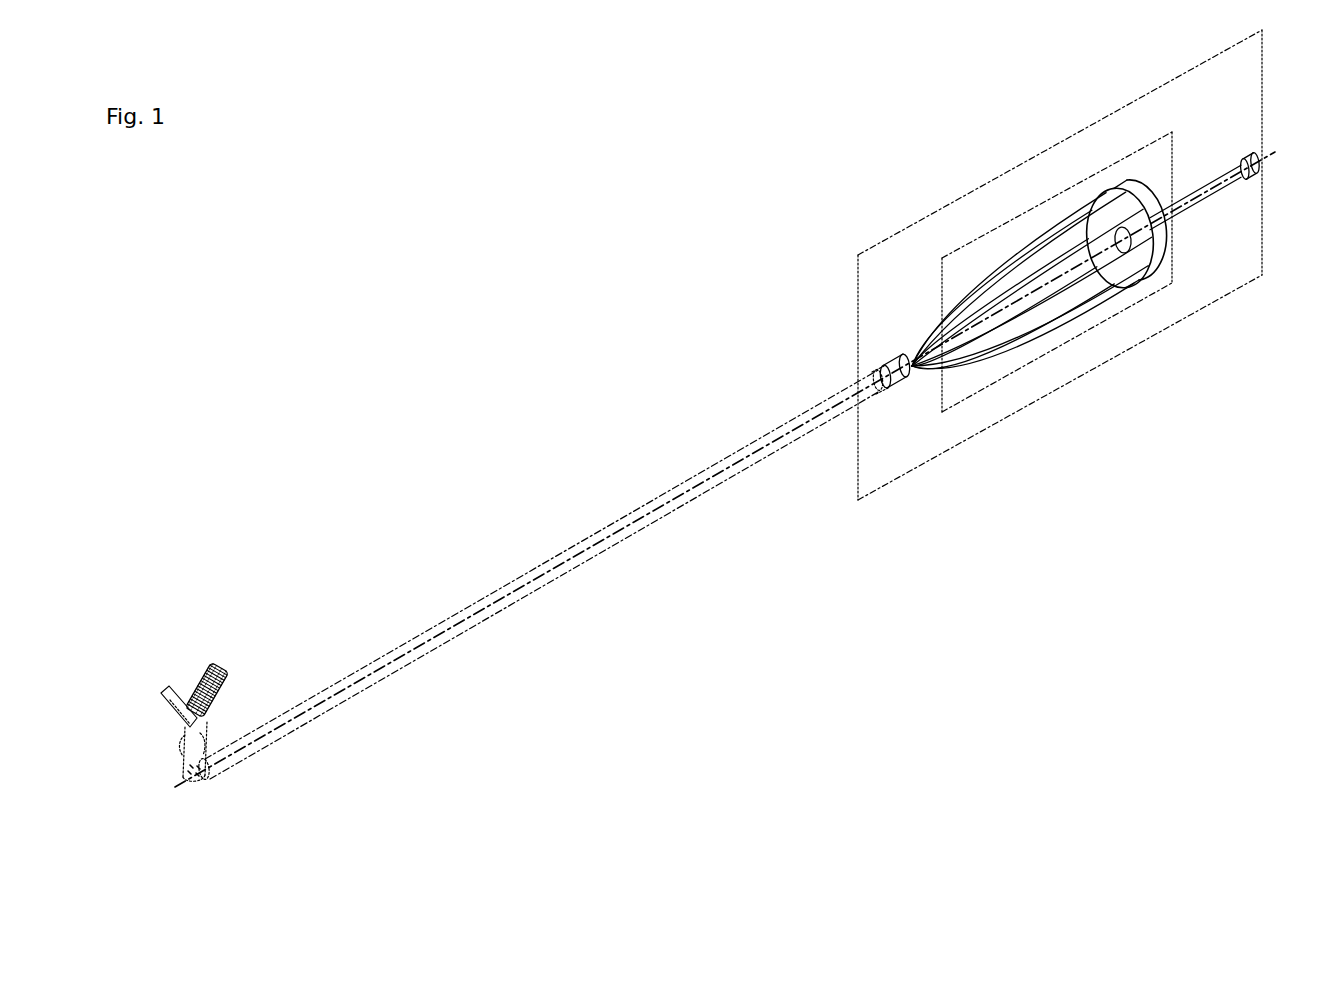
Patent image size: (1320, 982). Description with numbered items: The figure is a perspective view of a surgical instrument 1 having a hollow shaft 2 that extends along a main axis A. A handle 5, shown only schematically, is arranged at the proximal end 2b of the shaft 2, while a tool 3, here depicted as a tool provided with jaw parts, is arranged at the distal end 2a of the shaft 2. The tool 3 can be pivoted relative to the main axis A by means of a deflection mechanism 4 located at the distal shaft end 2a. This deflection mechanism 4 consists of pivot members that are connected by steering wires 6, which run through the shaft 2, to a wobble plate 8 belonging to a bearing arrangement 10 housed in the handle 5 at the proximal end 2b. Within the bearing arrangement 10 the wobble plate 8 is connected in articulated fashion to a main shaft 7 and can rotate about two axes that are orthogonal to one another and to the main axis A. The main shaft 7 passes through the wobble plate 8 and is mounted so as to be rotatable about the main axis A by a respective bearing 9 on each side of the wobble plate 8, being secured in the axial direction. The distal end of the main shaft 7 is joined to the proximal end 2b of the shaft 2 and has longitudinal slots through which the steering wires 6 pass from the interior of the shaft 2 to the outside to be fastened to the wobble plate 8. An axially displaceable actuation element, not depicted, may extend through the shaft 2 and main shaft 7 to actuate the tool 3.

The surgical instrument 1 is at (405, 349).
The hollow shaft 2 is at (588, 541).
The distal end of the shaft 2a is at (228, 770).
The proximal end of the shaft 2b is at (872, 380).
The tool 3 is at (218, 650).
The deflection mechanism 4 is at (205, 782).
The handle 5 is at (935, 213).
The steering wires 6 is at (930, 318).
The main shaft 7 is at (1201, 202).
The wobble plate 8 is at (1160, 272).
The bearing 9 is at (898, 383).
The bearing arrangement 10 is at (973, 390).
The main axis A is at (503, 602).